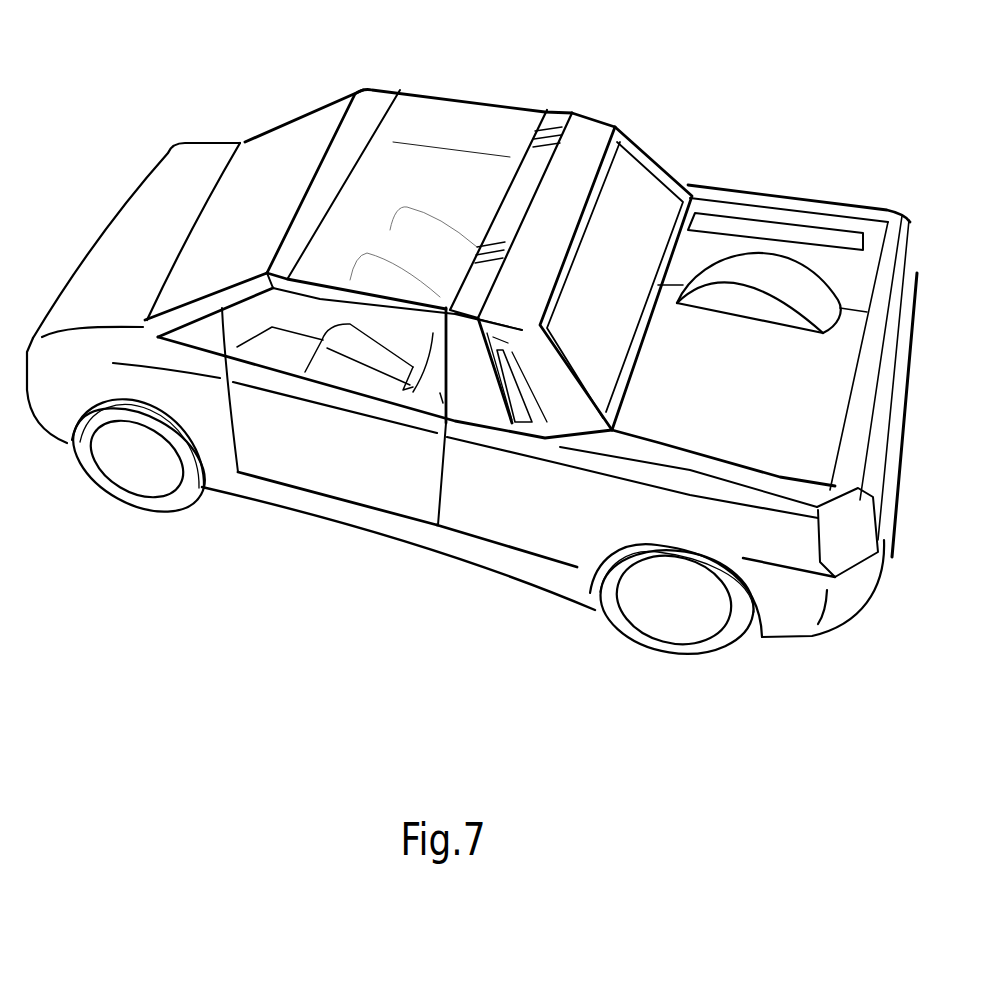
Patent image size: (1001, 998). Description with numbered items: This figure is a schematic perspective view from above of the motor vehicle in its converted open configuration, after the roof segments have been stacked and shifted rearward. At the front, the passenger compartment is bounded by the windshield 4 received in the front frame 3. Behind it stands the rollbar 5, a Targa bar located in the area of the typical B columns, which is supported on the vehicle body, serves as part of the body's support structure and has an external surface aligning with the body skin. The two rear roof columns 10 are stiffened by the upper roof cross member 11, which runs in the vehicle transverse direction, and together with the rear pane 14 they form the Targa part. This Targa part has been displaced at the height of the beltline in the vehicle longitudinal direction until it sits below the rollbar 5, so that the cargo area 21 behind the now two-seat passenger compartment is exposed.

The front frame 3 is at (367, 117).
The windshield 4 is at (290, 137).
The rollbar 5 is at (533, 160).
The rear roof columns 10 is at (568, 417).
The upper roof cross member 11 is at (588, 150).
The rear pane 14 is at (638, 182).
The cargo area 21 is at (737, 348).